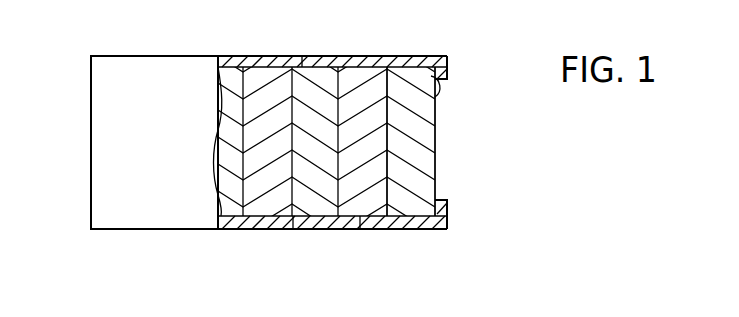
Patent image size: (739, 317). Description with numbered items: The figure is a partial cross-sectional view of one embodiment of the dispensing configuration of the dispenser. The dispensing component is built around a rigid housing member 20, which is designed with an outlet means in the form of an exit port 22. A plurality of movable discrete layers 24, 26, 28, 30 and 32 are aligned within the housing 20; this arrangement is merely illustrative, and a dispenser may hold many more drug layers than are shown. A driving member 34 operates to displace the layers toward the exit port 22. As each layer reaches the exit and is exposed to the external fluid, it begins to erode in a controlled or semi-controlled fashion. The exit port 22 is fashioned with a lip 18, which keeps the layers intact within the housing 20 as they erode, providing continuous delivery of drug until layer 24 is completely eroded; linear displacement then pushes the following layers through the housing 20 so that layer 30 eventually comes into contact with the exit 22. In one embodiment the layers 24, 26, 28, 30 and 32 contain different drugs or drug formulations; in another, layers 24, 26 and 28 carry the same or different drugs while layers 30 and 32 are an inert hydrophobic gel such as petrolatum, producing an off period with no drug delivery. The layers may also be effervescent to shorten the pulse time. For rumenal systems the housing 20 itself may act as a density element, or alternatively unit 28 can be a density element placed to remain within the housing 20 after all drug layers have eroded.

The lip 18 is at (437, 98).
The housing member 20 is at (345, 59).
The exit port 22 is at (437, 200).
The layer 24 is at (407, 63).
The layer 26 is at (311, 63).
The layer 28 is at (229, 63).
The layer 30 is at (360, 218).
The layer 32 is at (272, 218).
The driving member 34 is at (91, 108).